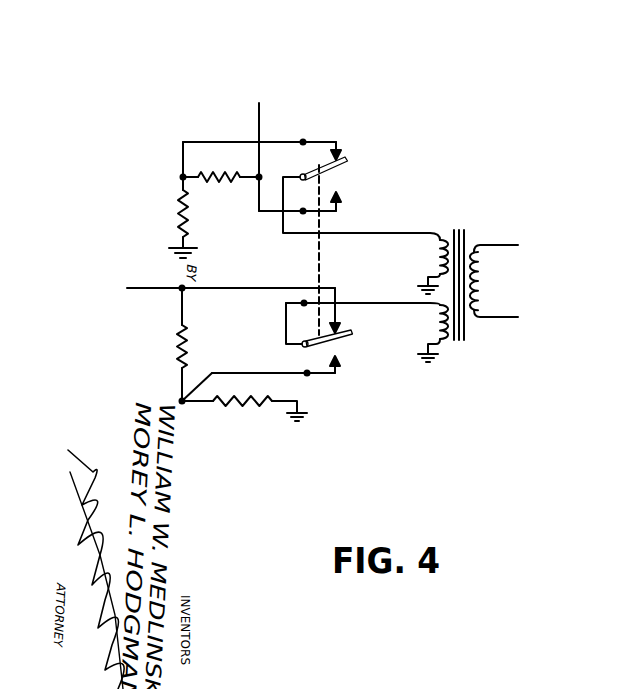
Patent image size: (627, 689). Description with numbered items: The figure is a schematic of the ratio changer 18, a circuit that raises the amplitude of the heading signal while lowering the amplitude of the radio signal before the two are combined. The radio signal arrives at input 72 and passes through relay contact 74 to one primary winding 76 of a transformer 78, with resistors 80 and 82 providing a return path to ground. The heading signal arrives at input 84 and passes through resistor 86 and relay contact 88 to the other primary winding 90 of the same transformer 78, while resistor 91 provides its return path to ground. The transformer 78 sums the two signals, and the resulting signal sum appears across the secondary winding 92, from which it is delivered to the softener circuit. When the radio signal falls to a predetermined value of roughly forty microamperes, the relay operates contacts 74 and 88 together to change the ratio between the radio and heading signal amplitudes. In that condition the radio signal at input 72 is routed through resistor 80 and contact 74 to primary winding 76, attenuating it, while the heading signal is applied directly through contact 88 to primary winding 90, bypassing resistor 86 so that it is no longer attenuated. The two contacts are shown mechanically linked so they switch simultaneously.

The ratio changer 18 is at (512, 33).
The input 72 is at (198, 292).
The relay contact 74 is at (338, 339).
The primary winding 76 is at (445, 347).
The transformer 78 is at (462, 223).
The resistor 80 is at (187, 350).
The resistor 82 is at (245, 410).
The input 84 is at (259, 132).
The resistor 86 is at (226, 183).
The relay contact 88 is at (323, 170).
The primary winding 90 is at (430, 251).
The resistor 91 is at (178, 210).
The secondary winding 92 is at (485, 265).